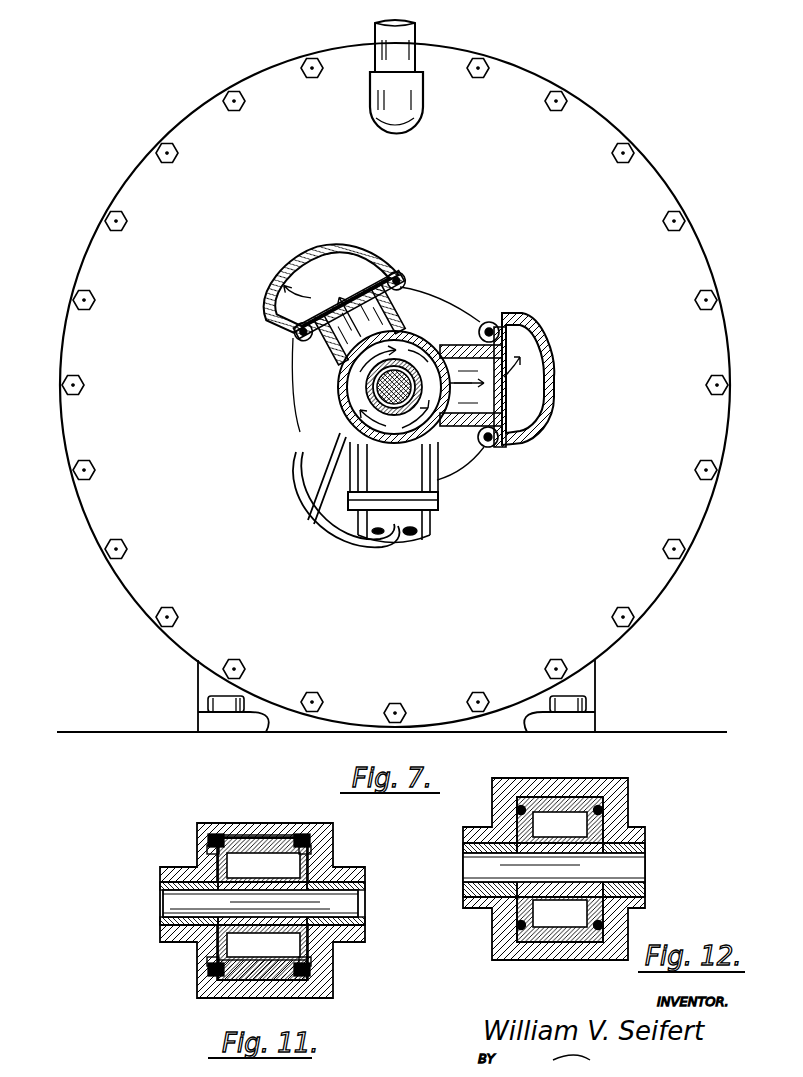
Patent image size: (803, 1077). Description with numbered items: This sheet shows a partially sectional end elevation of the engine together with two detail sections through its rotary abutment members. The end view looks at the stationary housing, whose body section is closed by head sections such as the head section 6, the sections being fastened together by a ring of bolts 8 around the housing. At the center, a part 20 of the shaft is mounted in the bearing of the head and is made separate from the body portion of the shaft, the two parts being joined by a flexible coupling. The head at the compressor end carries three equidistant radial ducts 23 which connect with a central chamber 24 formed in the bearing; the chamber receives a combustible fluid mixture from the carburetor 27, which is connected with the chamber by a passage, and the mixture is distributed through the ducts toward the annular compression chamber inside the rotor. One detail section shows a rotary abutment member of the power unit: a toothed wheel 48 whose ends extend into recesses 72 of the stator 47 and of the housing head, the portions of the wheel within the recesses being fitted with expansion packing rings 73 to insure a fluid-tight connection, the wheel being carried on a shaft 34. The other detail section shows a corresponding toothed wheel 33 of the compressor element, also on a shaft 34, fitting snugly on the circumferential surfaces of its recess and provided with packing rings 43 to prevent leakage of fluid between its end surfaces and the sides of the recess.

In FIG. 11, the head section 6 is at (197, 825).
In FIG. 7, the bolts 8 is at (113, 552).
In FIG. 7, the shaft part 20 is at (372, 400).
In FIG. 7, the radial ducts 23 is at (526, 340).
In FIG. 7, the central chamber 24 is at (354, 388).
In FIG. 7, the carburetor 27 is at (437, 522).
In FIG. 12, the toothed wheels 33 is at (600, 915).
In FIG. 11, the shaft 34 is at (340, 902).
In FIG. 12, the shaft 34 is at (633, 863).
In FIG. 12, the packing rings 43 is at (522, 923).
In FIG. 11, the stator 47 is at (332, 988).
In FIG. 11, the toothed wheels 48 is at (260, 842).
In FIG. 11, the recesses 72 is at (310, 948).
In FIG. 11, the expansion packing rings 73 is at (210, 968).